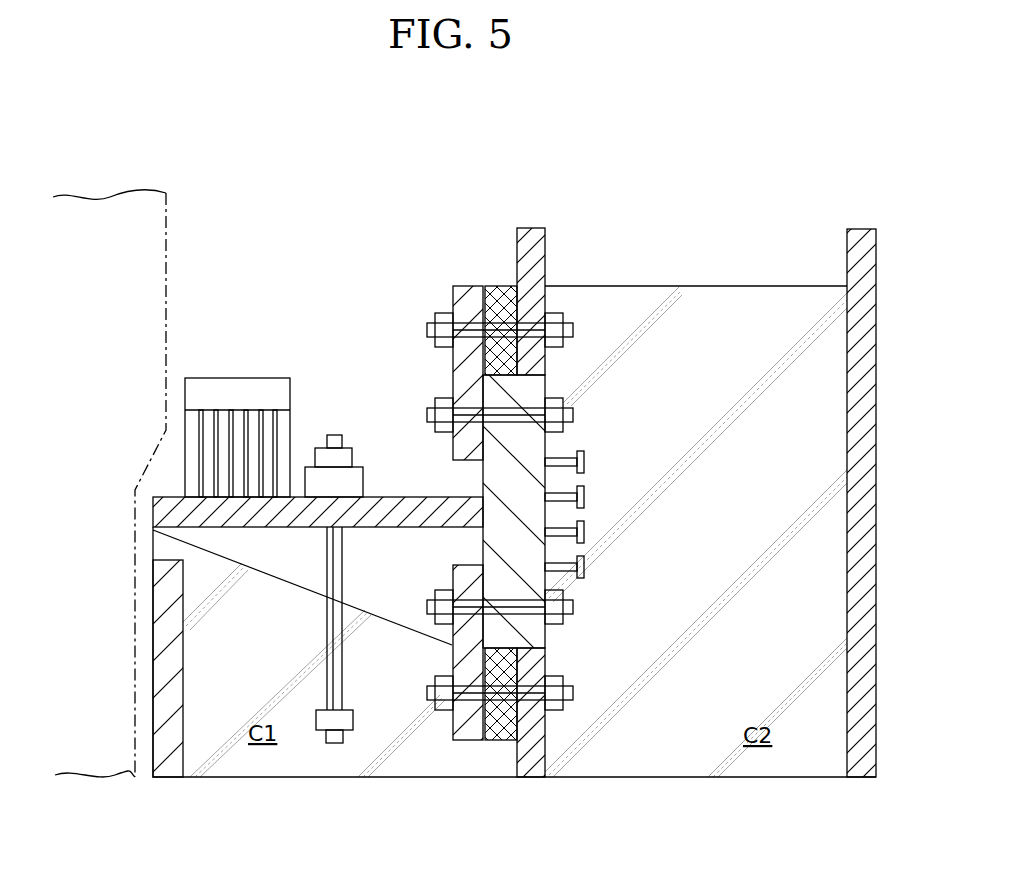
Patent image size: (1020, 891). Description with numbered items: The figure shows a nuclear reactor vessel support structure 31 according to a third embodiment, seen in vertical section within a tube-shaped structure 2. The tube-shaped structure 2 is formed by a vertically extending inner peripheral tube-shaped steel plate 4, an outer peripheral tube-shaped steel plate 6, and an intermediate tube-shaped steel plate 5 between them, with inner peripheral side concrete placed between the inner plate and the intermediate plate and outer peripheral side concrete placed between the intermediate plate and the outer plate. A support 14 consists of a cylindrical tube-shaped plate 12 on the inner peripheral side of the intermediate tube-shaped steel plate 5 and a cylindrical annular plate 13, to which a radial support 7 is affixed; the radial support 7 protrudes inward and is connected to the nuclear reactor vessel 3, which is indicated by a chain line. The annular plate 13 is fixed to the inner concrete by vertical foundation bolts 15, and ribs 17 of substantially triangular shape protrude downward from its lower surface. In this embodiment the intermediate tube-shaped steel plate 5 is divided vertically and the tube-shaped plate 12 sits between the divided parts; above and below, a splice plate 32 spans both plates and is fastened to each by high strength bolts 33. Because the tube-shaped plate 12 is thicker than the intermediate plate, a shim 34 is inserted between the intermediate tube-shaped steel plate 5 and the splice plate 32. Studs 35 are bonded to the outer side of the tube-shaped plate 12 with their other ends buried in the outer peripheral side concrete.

The tube-shaped structure 2 is at (809, 210).
The nuclear reactor vessel 3 is at (167, 242).
The inner peripheral tube-shaped steel plate 4 is at (168, 780).
The intermediate tube-shaped steel plate 5 is at (530, 778).
The outer peripheral tube-shaped steel plate 6 is at (860, 780).
The radial support 7 is at (217, 377).
The cylindrical tube-shaped plate 12 is at (483, 478).
The cylindrical annular plate 13 is at (383, 497).
The support 14 is at (432, 444).
The foundation bolts 15 is at (333, 435).
The ribs 17 is at (287, 588).
The nuclear reactor vessel support structure 31 is at (759, 136).
The splice plate 32 is at (463, 287).
The high strength bolts 33 is at (427, 328).
The shim 34 is at (502, 287).
The stud 35 is at (587, 458).